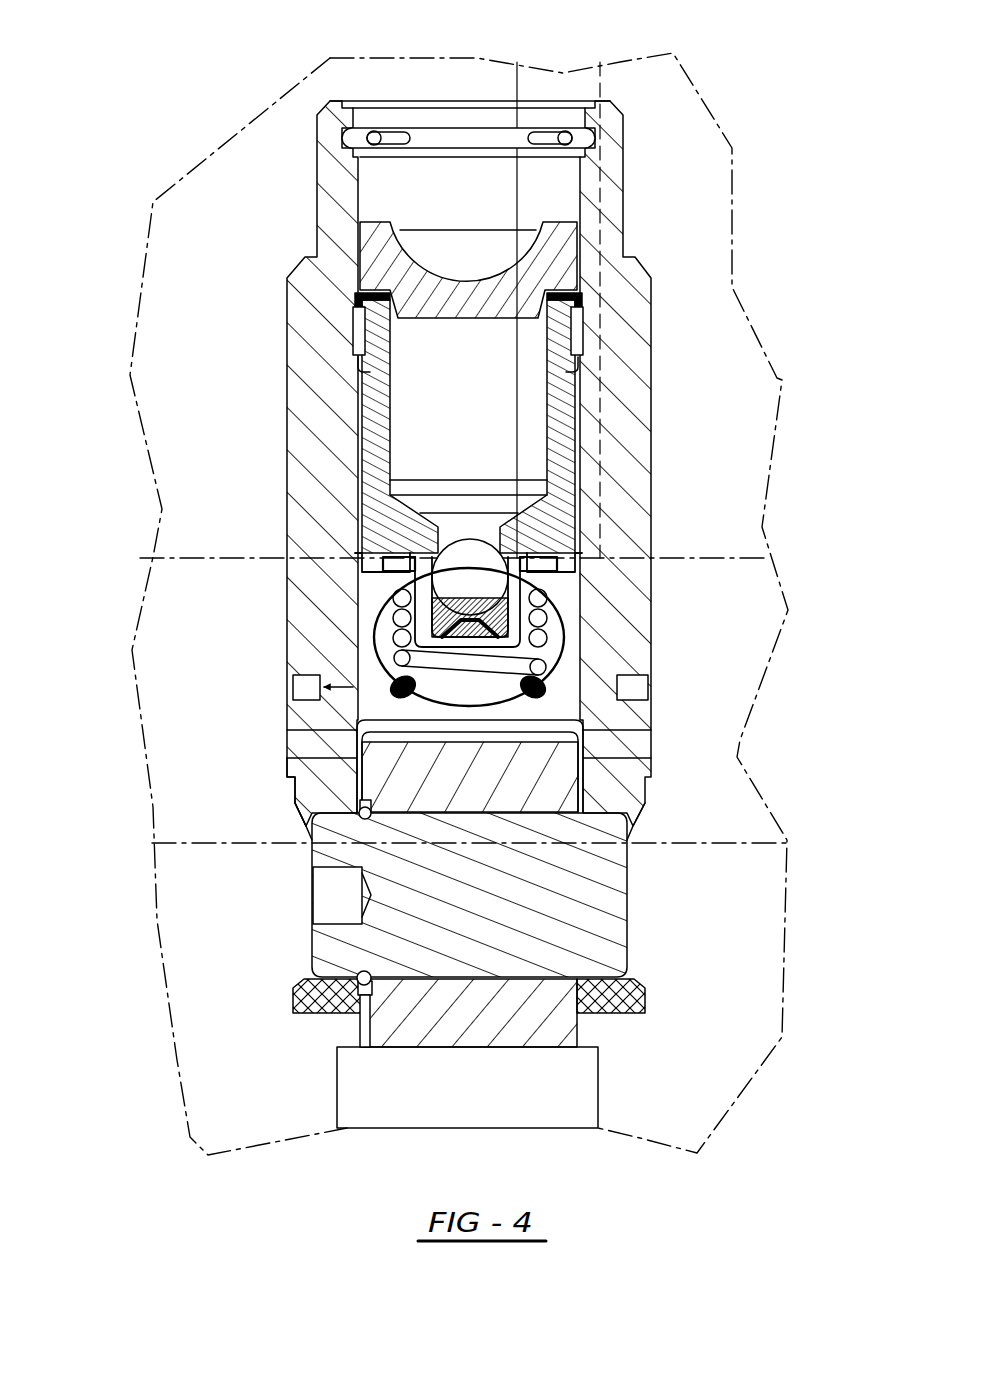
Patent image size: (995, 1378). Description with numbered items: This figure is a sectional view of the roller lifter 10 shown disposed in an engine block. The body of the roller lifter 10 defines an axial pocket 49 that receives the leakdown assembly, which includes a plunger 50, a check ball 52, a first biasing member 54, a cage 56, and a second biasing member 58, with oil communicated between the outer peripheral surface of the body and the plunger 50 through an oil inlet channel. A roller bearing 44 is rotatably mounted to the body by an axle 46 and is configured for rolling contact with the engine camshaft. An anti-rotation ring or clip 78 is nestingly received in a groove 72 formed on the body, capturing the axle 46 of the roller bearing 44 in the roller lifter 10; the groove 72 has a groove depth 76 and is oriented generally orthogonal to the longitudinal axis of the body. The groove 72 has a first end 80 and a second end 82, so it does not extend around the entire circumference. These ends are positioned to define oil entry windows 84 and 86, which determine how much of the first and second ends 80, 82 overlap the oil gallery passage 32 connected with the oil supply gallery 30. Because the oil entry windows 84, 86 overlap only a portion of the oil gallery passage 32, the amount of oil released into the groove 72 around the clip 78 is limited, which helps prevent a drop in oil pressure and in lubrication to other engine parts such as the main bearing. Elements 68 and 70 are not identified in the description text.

The roller lifter 10 is at (253, 97).
The oil supply gallery 30 is at (240, 557).
The oil gallery passage 32 is at (374, 598).
The roller bearing 44 is at (503, 1023).
The axle 46 is at (598, 900).
The axial pocket 49 is at (565, 395).
The plunger 50 is at (568, 357).
The check ball 52 is at (470, 548).
The first biasing member 54 is at (538, 655).
The cage 56 is at (546, 634).
The second biasing member 58 is at (503, 612).
The bolt head 68 is at (357, 977).
The bolt 70 is at (374, 1050).
The groove 72 is at (293, 700).
The groove depth 76 is at (289, 687).
The anti-rotation ring or clip 78 is at (640, 687).
The first end 80 is at (407, 695).
The second end 82 is at (535, 695).
The oil entry window 84 is at (405, 686).
The oil entry window 86 is at (545, 690).